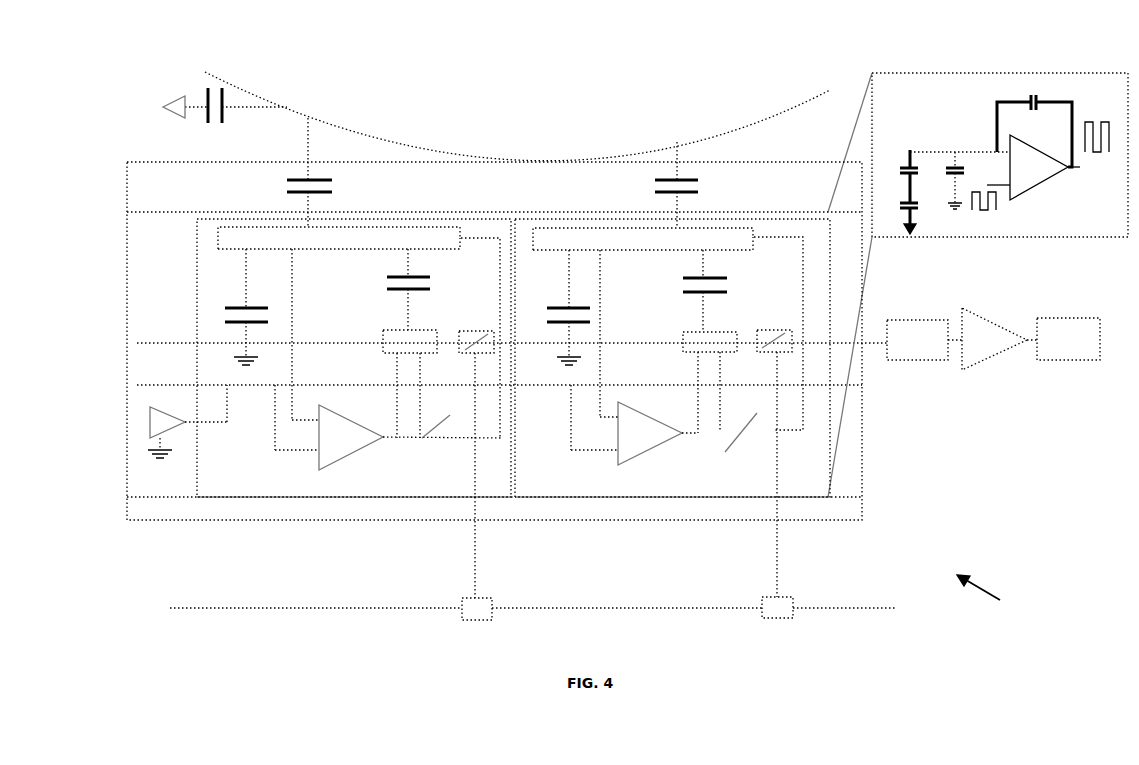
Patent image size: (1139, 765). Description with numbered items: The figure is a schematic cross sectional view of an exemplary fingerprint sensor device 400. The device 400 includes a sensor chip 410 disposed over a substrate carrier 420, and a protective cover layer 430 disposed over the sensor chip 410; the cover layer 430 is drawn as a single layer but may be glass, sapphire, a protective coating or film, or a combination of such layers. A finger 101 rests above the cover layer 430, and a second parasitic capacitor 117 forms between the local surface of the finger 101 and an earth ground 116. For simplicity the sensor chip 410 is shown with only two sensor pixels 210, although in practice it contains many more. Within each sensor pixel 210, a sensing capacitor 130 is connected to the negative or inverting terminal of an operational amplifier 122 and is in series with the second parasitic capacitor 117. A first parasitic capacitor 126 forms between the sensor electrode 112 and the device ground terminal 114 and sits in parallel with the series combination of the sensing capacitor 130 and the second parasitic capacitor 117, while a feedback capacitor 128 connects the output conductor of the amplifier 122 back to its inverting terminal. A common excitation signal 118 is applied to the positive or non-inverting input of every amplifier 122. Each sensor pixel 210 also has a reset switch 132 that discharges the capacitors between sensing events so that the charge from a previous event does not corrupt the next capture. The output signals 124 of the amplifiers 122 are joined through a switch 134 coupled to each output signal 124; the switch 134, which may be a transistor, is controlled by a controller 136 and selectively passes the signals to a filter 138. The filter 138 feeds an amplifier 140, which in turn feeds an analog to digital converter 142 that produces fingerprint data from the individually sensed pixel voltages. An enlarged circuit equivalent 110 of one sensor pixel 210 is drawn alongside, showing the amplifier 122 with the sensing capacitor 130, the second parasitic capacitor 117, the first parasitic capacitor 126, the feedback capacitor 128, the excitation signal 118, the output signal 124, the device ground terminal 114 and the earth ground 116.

The finger 101 is at (407, 150).
The circuit equivalent 110 is at (930, 75).
The sensor electrode 112 is at (218, 245).
The device ground terminal 114 is at (237, 360).
The earth ground 116 is at (172, 100).
The parasitic capacitor CP2 117 is at (207, 88).
The excitation signal Vin 118 is at (999, 204).
The operational amplifier 122 is at (340, 423).
The output signal Vout 124 is at (384, 333).
The parasitic capacitor CP1 126 is at (228, 308).
The feedback capacitor CF 128 is at (430, 288).
The capacitor CS 130 is at (287, 190).
The reset switch 132 is at (424, 440).
The switch 134 is at (484, 322).
The controller 136 is at (492, 598).
The filter 138 is at (152, 417).
The amplifier 140 is at (980, 313).
The analog to digital converter 142 is at (1048, 318).
The sensor pixel 210 is at (197, 473).
The fingerprint sensor device 400 is at (992, 592).
The sensor chip 410 is at (855, 442).
The substrate carrier 420 is at (855, 505).
The protective cover layer 430 is at (767, 172).